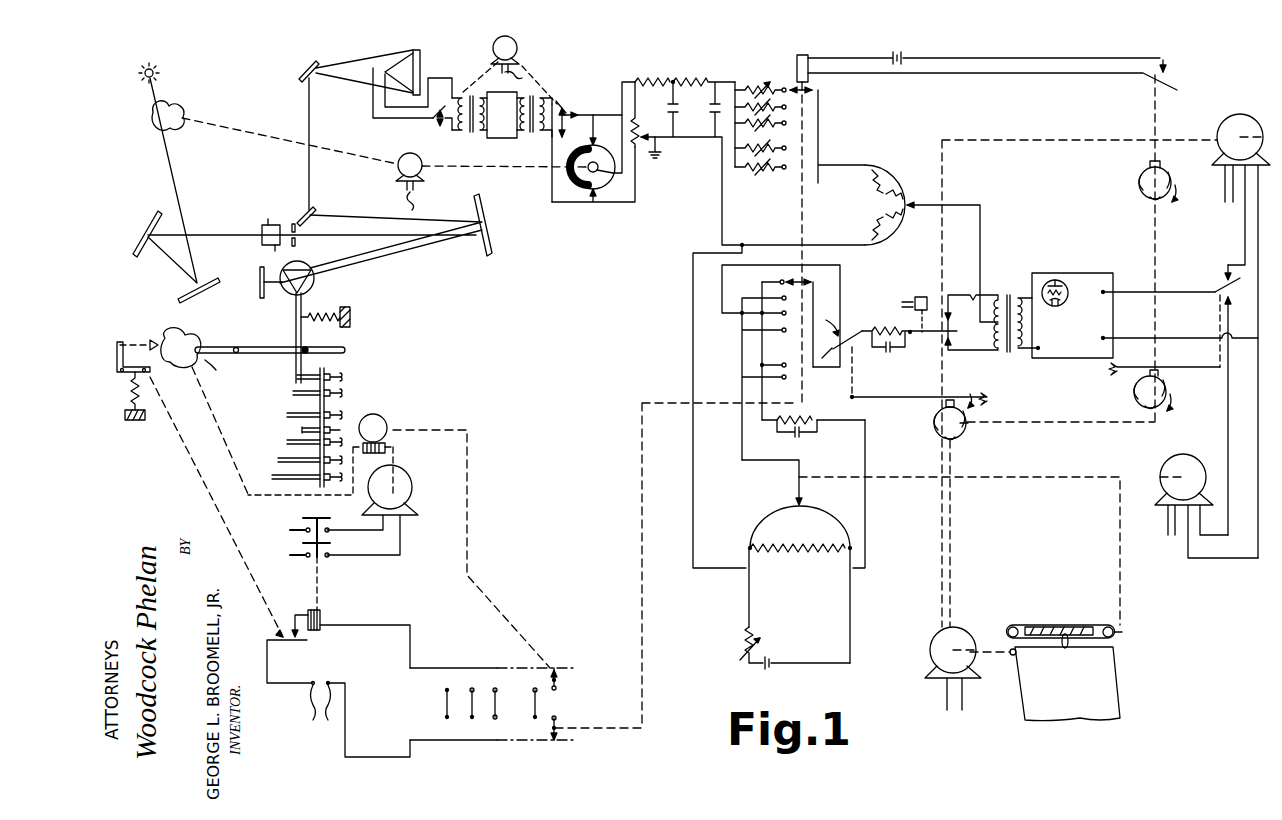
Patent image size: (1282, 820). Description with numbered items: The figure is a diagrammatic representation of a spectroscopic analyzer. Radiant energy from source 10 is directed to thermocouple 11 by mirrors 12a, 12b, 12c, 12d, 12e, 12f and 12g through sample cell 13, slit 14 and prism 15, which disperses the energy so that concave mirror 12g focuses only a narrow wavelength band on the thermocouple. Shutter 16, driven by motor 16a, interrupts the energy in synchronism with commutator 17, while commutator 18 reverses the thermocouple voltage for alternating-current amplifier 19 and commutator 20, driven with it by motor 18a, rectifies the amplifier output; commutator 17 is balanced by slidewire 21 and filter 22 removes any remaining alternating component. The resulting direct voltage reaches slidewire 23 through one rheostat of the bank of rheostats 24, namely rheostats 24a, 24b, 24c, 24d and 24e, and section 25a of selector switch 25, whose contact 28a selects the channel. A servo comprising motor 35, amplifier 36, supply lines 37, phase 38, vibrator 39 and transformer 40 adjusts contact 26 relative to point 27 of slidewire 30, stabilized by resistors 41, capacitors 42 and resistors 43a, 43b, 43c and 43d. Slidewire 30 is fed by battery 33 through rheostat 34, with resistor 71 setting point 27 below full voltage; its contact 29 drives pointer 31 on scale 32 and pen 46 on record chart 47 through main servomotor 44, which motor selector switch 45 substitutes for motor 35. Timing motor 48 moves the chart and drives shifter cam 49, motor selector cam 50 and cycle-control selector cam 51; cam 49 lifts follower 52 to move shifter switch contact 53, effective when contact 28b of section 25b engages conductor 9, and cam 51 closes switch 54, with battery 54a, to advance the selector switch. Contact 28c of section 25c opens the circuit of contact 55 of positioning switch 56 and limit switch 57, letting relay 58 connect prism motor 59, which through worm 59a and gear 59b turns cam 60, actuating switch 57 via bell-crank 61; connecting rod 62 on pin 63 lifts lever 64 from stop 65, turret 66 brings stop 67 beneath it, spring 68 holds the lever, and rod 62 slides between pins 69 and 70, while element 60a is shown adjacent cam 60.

The conductor 9 is at (760, 283).
The source 10 is at (158, 66).
The thermocouple 11 is at (387, 68).
The mirror 12a is at (200, 292).
The mirror 12b is at (145, 224).
The mirror 12c is at (489, 222).
The mirror 12d is at (259, 282).
The mirror 12e is at (314, 213).
The mirror 12f is at (300, 68).
The concave mirror 12g is at (421, 62).
The sample cell 13 is at (268, 219).
The slit 14 is at (296, 241).
The prism 15 is at (313, 284).
The shutter 16 is at (150, 124).
The motor 16a is at (420, 158).
The commutator 17 is at (606, 184).
The commutator 18 is at (431, 122).
The motor 18a is at (517, 48).
The alternating-current amplifier 19 is at (502, 115).
The commutator 20 is at (570, 108).
The slidewire 21 is at (645, 118).
The filter 22 is at (703, 116).
The slidewire 23 is at (906, 180).
The bank of rheostats 24 is at (770, 203).
The rheostat 24a is at (793, 70).
The rheostat 24b is at (748, 88).
The rheostat 24c is at (768, 130).
The rheostat 24d is at (745, 150).
The rheostat 24e is at (746, 168).
The selector switch 25 is at (725, 361).
The section of selector switch 25a is at (841, 136).
The section of selector switch 25b is at (781, 362).
The section of selector switch 25c is at (492, 715).
The contact 26 is at (915, 215).
The point 27 is at (826, 555).
The contact 28a is at (815, 88).
The contact 28b is at (805, 278).
The contact 28c is at (552, 748).
The contact 29 is at (794, 504).
The slidewire 30 is at (780, 514).
The pointer 31 is at (1078, 624).
The scale 32 is at (1045, 626).
The battery 33 is at (772, 668).
The rheostat 34 is at (743, 648).
The motor 35 is at (1230, 118).
The amplifier 36 is at (1145, 315).
The alternating-current supply lines 37 is at (947, 700).
The phase 38 is at (1257, 552).
The vibrator 39 is at (944, 293).
The transformer 40 is at (1010, 290).
The resistors 41 is at (892, 330).
The capacitors 42 is at (890, 370).
The resistor 43a is at (884, 170).
The resistor 43b is at (885, 194).
The resistor 43c is at (885, 214).
The resistor 43d is at (880, 246).
The main servomotor 44 is at (1188, 455).
The motor selector switch 45 is at (1213, 282).
The pen 46 is at (1060, 646).
The record chart 47 is at (1120, 680).
The timing motor 48 is at (935, 640).
The shifter cam 49 is at (935, 426).
The motor selector cam 50 is at (1135, 390).
The cycle-control selector cam 51 is at (1138, 180).
The follower 52 is at (950, 398).
The shifter switch contact 53 is at (848, 325).
The cycle-control selector switch 54 is at (1168, 82).
The battery 54a is at (908, 52).
The contact 55 is at (558, 682).
The positioning switch 56 is at (466, 668).
The limit switch 57 is at (302, 645).
The relay 58 is at (315, 578).
The prism motor 59 is at (412, 485).
The worm 59a is at (386, 448).
The gear 59b is at (385, 420).
The cam 60 is at (192, 338).
The follower 60a is at (152, 340).
The bell-crank 61 is at (128, 378).
The connecting rod 62 is at (272, 347).
The pin 63 is at (217, 376).
The lever 64 is at (300, 365).
The stop 65 is at (345, 375).
The turret 66 is at (310, 413).
The stop 67 is at (345, 393).
The spring 68 is at (345, 305).
The pin 69 is at (238, 353).
The pin 70 is at (310, 345).
The resistor 71 is at (832, 546).